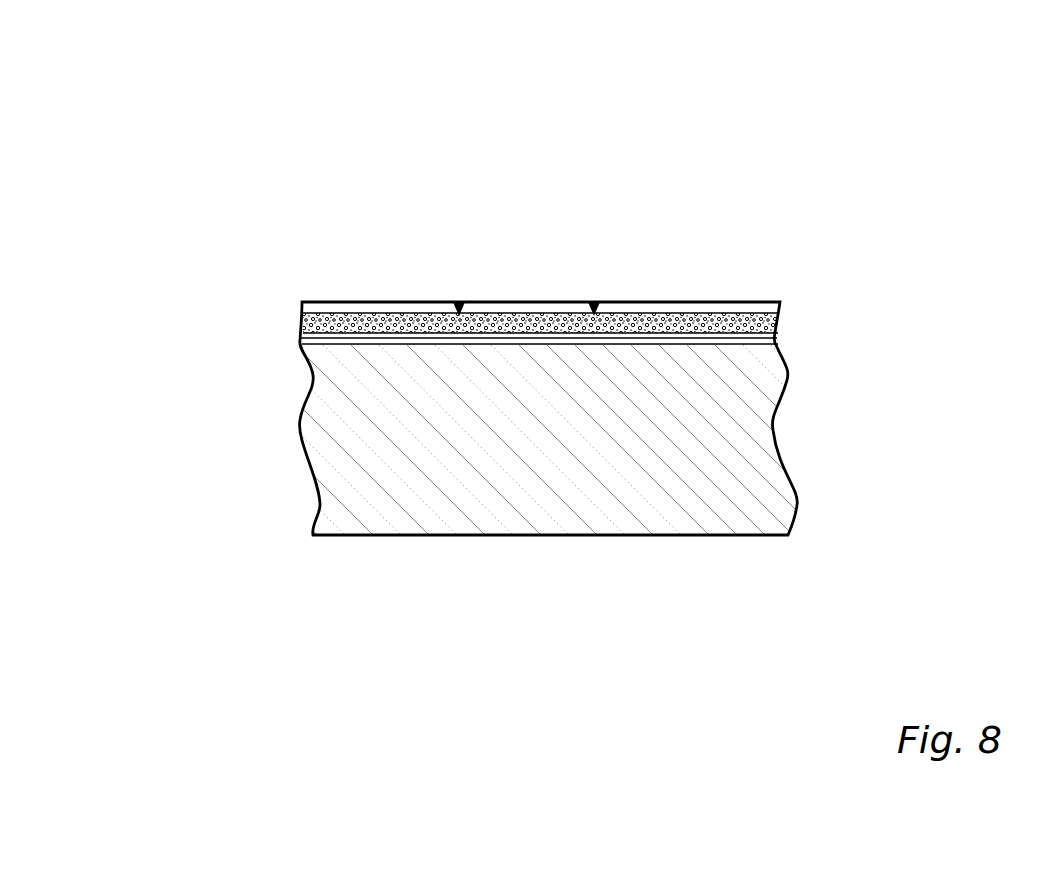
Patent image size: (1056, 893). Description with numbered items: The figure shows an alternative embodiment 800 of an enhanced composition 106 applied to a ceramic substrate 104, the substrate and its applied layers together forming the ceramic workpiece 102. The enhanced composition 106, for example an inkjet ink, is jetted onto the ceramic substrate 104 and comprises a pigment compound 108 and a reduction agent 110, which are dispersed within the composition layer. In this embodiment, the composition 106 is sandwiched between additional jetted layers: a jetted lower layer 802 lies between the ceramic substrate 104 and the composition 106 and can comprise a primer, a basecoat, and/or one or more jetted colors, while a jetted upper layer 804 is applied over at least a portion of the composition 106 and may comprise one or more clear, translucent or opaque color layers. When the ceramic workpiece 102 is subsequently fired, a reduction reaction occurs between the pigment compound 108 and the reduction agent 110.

The alternative embodiment 800 is at (888, 162).
The ceramic workpiece 102 is at (825, 283).
The ceramic substrate 104 is at (490, 535).
The enhanced composition 106 is at (292, 337).
The pigment compound 108 is at (459, 302).
The reduction agent 110 is at (594, 302).
The jetted lower layer 802 is at (297, 341).
The jetted upper layer 804 is at (300, 308).